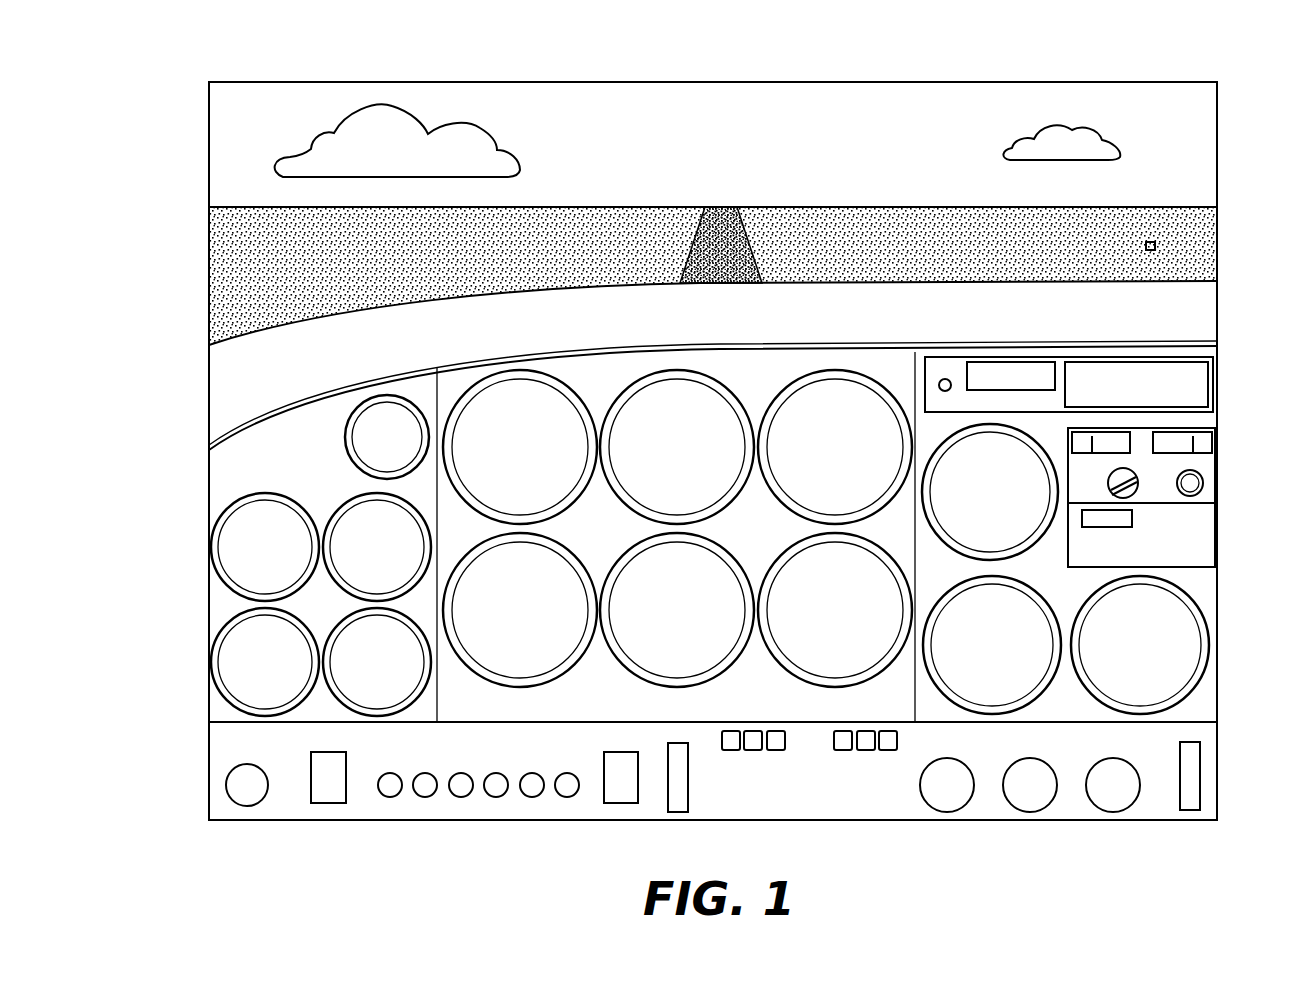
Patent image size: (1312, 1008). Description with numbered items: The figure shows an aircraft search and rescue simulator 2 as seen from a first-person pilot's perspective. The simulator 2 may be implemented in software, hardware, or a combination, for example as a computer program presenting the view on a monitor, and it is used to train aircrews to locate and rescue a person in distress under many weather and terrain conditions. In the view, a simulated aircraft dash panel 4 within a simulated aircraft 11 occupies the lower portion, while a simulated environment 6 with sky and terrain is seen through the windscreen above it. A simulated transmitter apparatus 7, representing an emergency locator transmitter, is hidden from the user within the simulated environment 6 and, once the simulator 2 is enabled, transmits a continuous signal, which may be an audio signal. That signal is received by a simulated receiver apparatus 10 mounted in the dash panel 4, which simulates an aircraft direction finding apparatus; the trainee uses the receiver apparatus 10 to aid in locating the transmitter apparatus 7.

The aircraft search and rescue simulator 2 is at (214, 42).
The simulated aircraft dash panel 4 is at (219, 478).
The simulated environment 6 is at (250, 207).
The simulated transmitter apparatus 7 is at (1155, 245).
The simulated receiver apparatus 10 is at (1205, 540).
The simulated aircraft 11 is at (266, 312).